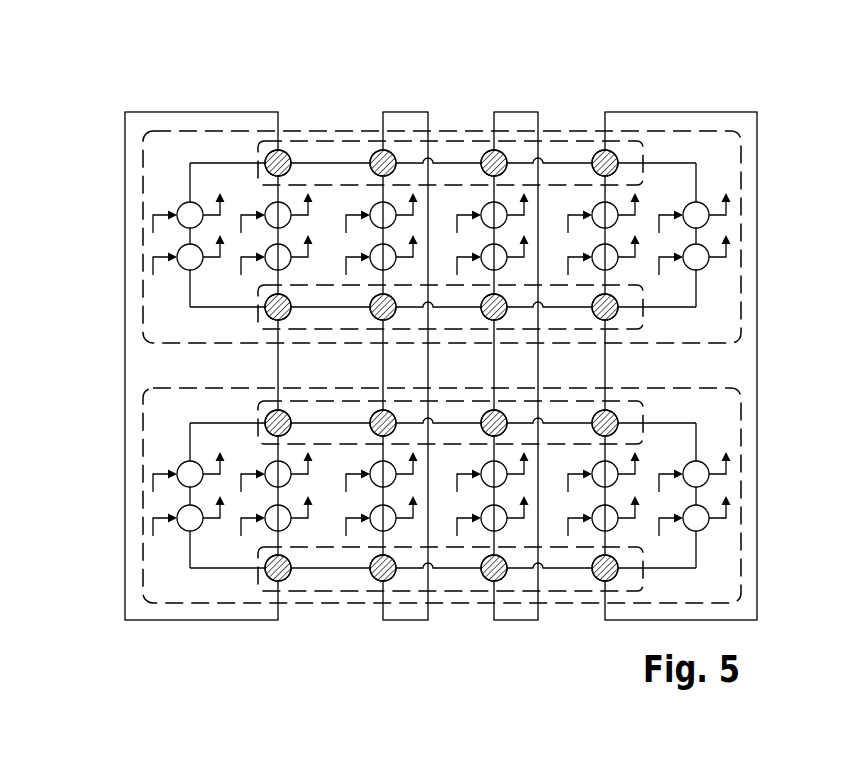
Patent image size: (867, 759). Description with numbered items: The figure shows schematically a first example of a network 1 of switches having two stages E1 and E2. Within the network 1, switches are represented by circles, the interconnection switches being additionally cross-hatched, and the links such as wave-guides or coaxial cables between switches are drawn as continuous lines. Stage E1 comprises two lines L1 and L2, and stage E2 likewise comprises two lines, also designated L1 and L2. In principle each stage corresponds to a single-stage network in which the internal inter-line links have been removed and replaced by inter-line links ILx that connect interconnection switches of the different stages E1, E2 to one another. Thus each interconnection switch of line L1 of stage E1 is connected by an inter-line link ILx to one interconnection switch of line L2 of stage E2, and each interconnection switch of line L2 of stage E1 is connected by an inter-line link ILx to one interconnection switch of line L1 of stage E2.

The network of switches 1 is at (561, 74).
The first stage E1 is at (143, 172).
The second stage E2 is at (143, 532).
The line L1 is at (206, 405).
The line L2 is at (585, 660).
The inter-line link ILx is at (93, 415).